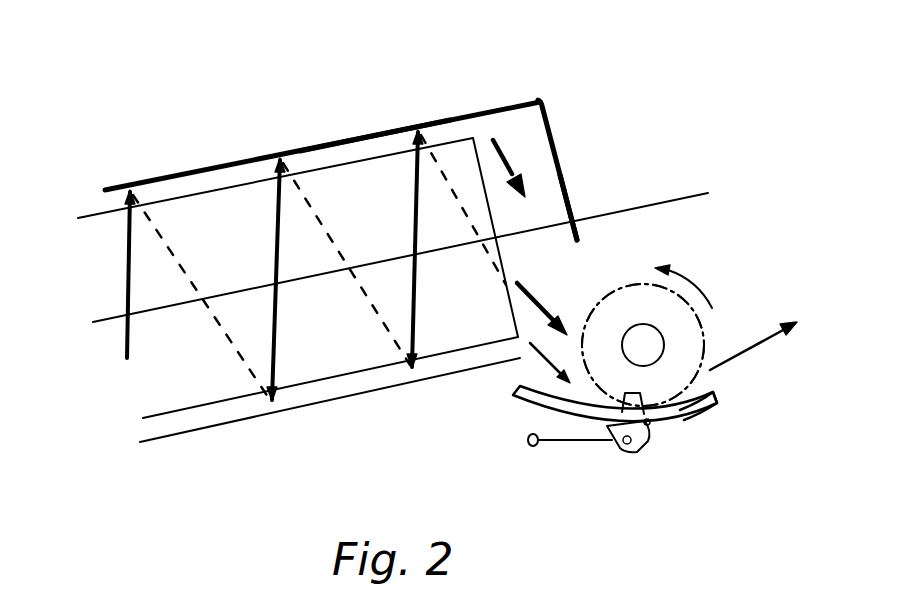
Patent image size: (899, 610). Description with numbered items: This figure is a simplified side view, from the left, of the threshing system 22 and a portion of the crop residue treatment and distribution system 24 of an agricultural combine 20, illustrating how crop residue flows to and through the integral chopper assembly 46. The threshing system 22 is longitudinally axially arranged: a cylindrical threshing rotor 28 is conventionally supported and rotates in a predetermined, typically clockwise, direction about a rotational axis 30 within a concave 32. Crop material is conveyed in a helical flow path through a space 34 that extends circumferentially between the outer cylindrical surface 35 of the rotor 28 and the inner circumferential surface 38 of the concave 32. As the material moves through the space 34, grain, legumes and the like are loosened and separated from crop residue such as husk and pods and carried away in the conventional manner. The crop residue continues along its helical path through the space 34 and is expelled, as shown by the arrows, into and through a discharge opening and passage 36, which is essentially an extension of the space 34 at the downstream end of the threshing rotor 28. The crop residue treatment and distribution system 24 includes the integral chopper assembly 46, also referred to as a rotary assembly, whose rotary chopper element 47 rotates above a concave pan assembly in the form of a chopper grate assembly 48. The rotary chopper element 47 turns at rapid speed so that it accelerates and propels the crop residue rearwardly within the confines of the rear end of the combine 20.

The agricultural combine 20 is at (655, 119).
The threshing system 22 is at (570, 110).
The crop residue treatment and distribution system 24 is at (772, 232).
The threshing rotor 28 is at (458, 138).
The rotational axis 30 is at (105, 313).
The concave 32 is at (155, 178).
The space 34 is at (343, 138).
The outer cylindrical surface 35 is at (230, 190).
The discharge opening and passage 36 is at (533, 205).
The inner circumferential surface 38 is at (155, 435).
The integral chopper assembly 46 is at (728, 380).
The rotary chopper element 47 is at (716, 322).
The chopper grate assembly 48 is at (518, 410).